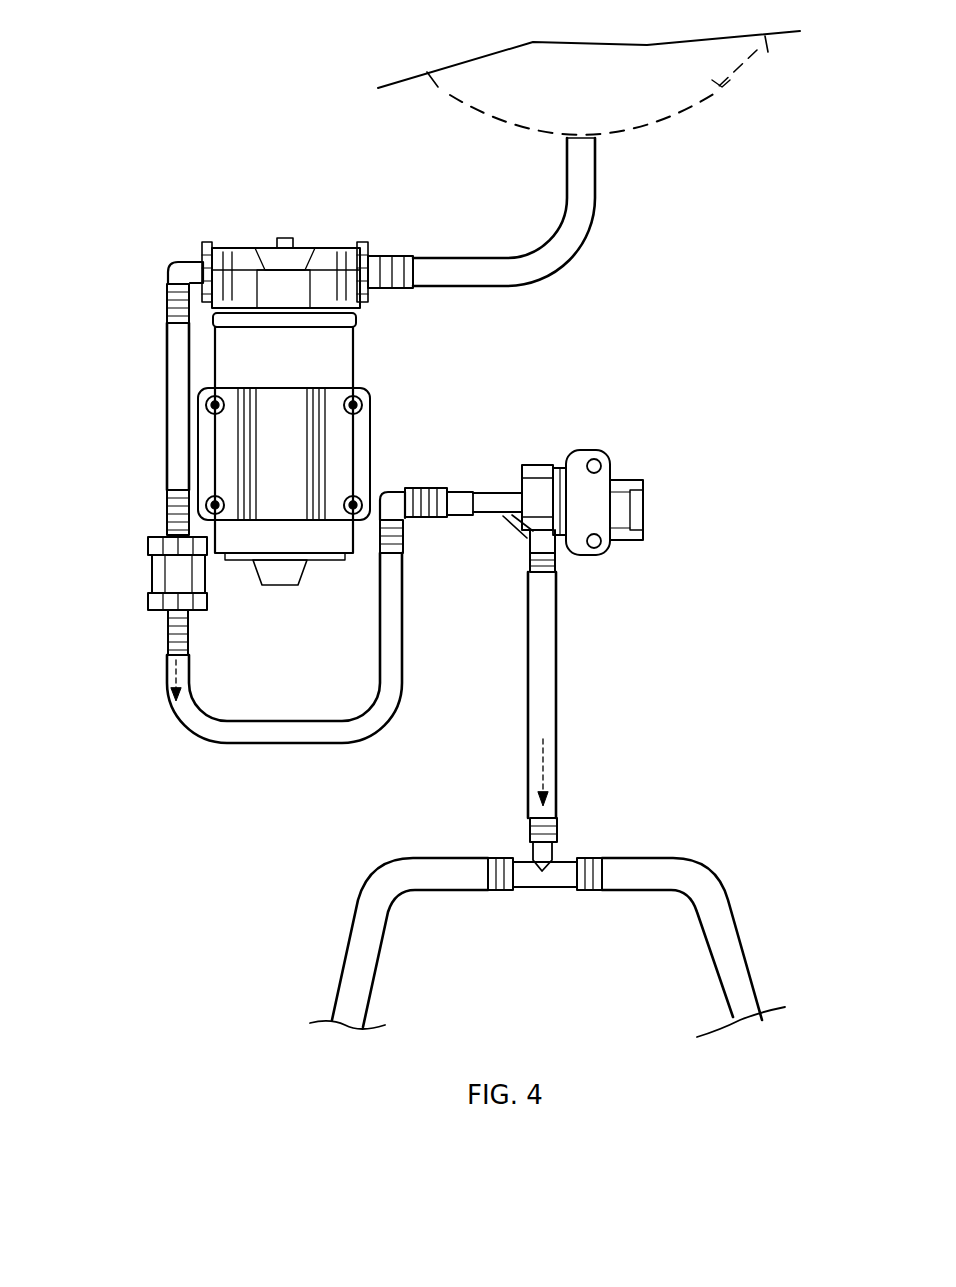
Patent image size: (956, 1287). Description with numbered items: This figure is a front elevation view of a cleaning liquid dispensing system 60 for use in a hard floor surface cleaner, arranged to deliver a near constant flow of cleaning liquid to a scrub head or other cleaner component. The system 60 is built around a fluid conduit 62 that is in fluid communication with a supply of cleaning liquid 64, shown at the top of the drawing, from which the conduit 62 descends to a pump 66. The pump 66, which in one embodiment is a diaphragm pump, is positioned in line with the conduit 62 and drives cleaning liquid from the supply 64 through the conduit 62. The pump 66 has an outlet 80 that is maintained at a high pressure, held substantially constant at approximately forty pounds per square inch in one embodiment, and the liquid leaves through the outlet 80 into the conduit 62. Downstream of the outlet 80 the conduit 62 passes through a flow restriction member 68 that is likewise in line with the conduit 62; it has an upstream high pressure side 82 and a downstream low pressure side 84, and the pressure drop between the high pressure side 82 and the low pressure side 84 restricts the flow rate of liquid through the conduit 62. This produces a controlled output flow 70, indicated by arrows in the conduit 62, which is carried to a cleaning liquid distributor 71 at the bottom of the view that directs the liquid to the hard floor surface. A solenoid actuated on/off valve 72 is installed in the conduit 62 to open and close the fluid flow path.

The cleaning liquid dispensing system 60 is at (671, 269).
The fluid conduit 62 is at (522, 273).
The supply of cleaning liquid 64 is at (722, 84).
The pump 66 is at (350, 363).
The flow restriction member 68 is at (150, 567).
The output flow 70 is at (168, 670).
The cleaning liquid distributor 71 is at (634, 814).
The solenoid actuated on/off valve 72 is at (621, 426).
The outlet 80 is at (188, 260).
The upstream high pressure side 82 is at (165, 525).
The downstream low pressure side 84 is at (167, 613).